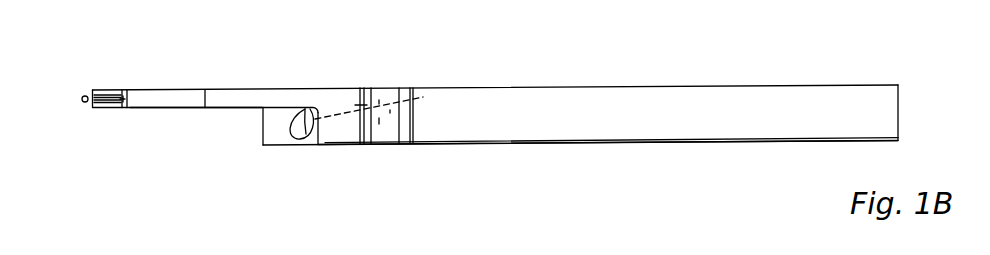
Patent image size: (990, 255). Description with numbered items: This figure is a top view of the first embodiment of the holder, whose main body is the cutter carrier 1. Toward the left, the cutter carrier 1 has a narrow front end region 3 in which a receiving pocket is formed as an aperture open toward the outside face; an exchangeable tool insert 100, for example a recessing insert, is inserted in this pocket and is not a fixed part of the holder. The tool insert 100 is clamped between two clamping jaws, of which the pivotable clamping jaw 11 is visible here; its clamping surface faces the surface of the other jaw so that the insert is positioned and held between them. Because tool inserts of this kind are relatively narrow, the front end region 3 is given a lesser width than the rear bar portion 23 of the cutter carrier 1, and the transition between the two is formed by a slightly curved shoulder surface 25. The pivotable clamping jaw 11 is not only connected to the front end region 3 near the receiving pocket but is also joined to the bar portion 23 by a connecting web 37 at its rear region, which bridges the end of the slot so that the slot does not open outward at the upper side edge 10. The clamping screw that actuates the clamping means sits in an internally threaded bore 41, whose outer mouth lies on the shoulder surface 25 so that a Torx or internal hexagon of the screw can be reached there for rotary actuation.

The cutter carrier 1 is at (636, 86).
The upper side edge 10 is at (732, 117).
The pivotable clamping jaw 11 is at (172, 95).
The front end region 3 is at (182, 108).
The tool insert 100 is at (107, 89).
The bore 41 is at (299, 139).
The shoulder surface 25 is at (361, 133).
The connecting web 37 is at (385, 135).
The bar portion 23 is at (597, 144).